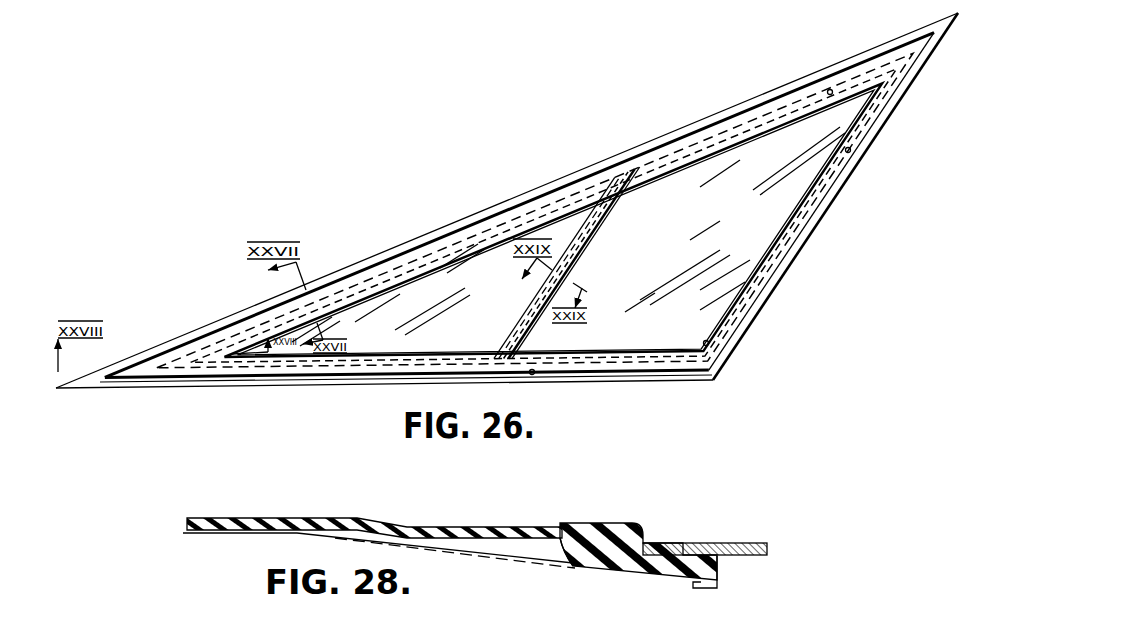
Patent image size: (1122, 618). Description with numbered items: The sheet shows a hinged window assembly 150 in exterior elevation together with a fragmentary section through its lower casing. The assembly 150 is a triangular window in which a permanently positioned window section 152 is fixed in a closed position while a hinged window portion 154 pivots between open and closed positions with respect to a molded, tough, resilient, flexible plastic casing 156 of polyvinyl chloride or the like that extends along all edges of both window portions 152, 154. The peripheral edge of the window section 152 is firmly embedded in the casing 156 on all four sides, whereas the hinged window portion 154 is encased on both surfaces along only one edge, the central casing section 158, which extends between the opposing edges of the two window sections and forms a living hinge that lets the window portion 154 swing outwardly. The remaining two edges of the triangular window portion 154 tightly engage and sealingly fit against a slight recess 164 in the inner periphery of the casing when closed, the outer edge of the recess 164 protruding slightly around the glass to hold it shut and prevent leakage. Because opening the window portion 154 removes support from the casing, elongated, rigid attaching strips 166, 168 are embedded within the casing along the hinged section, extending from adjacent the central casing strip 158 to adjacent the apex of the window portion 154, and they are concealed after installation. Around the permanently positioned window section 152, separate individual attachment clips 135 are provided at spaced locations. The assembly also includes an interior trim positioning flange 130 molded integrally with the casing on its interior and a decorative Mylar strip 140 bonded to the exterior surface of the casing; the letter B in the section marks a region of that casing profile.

In FIG. 26, the hinged window assembly 150 is at (556, 160).
In FIG. 26, the casing 156 is at (616, 174).
In FIG. 28, the casing 156 is at (598, 490).
In FIG. 26, the attaching strip 166 is at (404, 262).
In FIG. 26, the attaching strip 168 is at (313, 372).
In FIG. 26, the casing section 158 is at (608, 221).
In FIG. 26, the hinged window portion 154 is at (472, 295).
In FIG. 28, the hinged window portion 154 is at (712, 542).
In FIG. 26, the permanently positioned window section 152 is at (742, 219).
In FIG. 26, the attachment clip 135 is at (832, 90).
In FIG. 28, the decorative Mylar strip 140 is at (338, 494).
In FIG. 28, the recess 164 is at (648, 543).
In FIG. 28, the interior trim positioning flange 130 is at (719, 587).
In FIG. 28, the reference section B is at (489, 571).